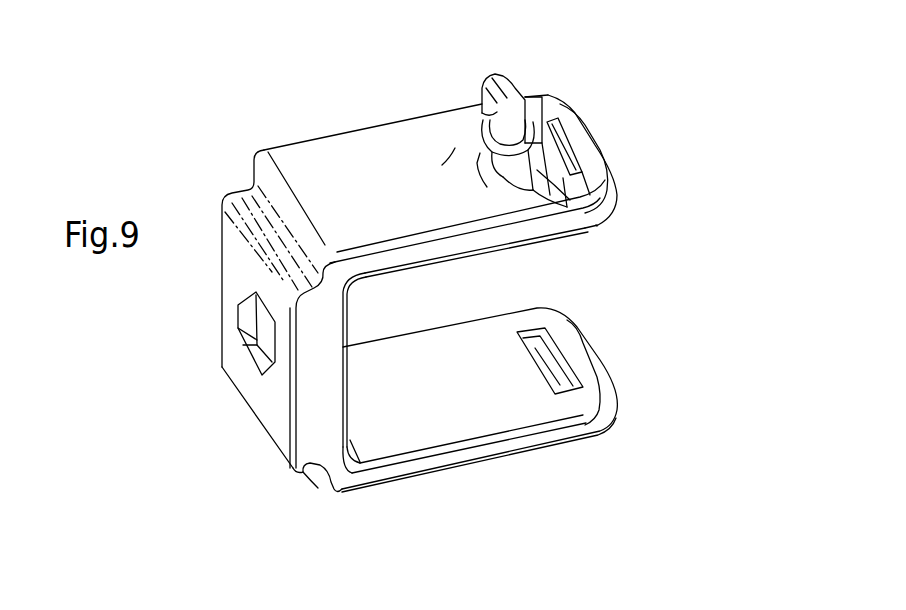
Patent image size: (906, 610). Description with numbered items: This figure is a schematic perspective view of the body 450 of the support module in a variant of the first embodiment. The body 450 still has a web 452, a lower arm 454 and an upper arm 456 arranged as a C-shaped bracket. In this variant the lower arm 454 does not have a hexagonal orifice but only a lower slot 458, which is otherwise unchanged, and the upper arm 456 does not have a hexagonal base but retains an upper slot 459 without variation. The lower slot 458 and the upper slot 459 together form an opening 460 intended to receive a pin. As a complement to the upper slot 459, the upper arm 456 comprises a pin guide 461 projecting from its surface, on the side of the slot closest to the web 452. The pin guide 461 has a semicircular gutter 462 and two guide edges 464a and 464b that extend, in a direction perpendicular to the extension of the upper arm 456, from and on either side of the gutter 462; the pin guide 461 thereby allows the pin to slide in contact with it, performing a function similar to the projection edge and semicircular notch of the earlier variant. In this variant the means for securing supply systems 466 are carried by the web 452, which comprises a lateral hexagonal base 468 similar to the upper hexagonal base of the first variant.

The body 450 is at (266, 111).
The web 452 is at (308, 470).
The lower arm 454 is at (527, 445).
The upper arm 456 is at (420, 143).
The lower slot 458 is at (555, 392).
The upper slot 459 is at (553, 98).
The opening 460 is at (627, 233).
The pin guide 461 is at (511, 104).
The semicircular gutter 462 is at (446, 165).
The guide edge 464a is at (510, 172).
The guide edge 464b is at (480, 78).
The means for securing supply systems 466 is at (213, 416).
The lateral hexagonal base 468 is at (240, 336).